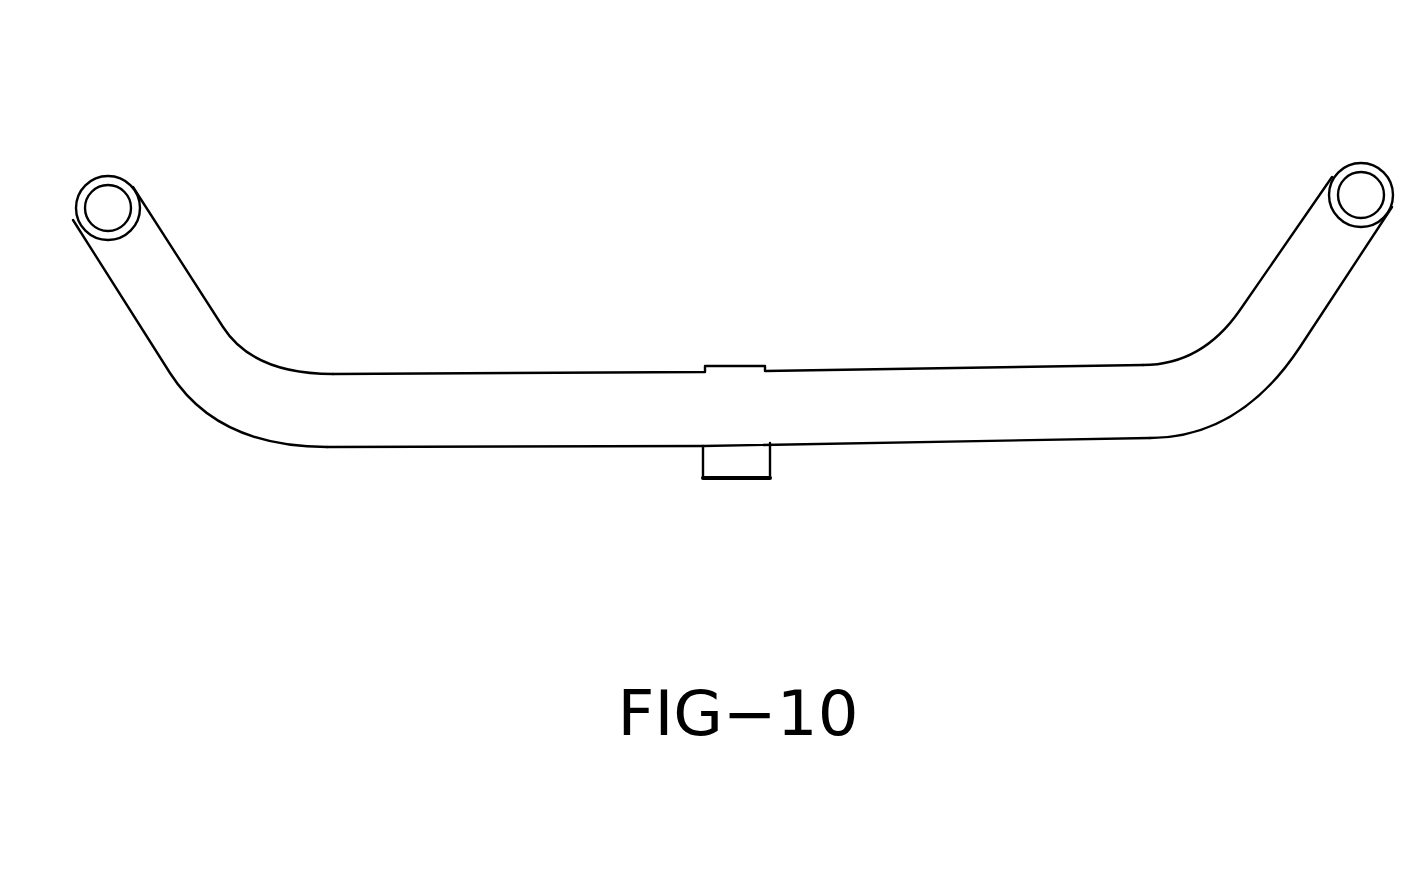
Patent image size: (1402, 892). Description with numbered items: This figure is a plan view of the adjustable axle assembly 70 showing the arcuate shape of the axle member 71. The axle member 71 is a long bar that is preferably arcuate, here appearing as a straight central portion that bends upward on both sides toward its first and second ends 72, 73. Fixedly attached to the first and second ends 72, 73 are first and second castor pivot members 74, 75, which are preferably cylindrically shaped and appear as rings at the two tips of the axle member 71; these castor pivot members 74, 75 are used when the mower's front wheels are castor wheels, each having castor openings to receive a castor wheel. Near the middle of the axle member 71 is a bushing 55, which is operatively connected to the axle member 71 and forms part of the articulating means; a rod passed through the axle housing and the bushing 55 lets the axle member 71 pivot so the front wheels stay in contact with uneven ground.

The adjustable axle assembly 70 is at (812, 190).
The axle member 71 is at (890, 375).
The first end 72 is at (1314, 213).
The second end 73 is at (157, 236).
The first castor pivot member 74 is at (1365, 163).
The second castor pivot member 75 is at (110, 178).
The bushing 55 is at (757, 465).